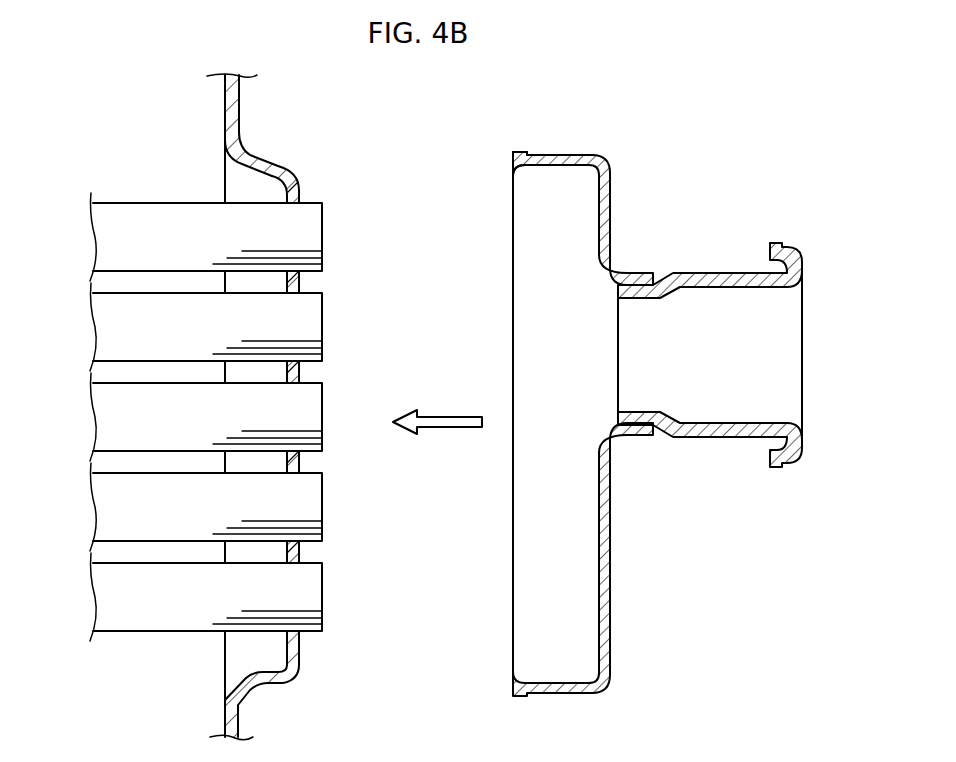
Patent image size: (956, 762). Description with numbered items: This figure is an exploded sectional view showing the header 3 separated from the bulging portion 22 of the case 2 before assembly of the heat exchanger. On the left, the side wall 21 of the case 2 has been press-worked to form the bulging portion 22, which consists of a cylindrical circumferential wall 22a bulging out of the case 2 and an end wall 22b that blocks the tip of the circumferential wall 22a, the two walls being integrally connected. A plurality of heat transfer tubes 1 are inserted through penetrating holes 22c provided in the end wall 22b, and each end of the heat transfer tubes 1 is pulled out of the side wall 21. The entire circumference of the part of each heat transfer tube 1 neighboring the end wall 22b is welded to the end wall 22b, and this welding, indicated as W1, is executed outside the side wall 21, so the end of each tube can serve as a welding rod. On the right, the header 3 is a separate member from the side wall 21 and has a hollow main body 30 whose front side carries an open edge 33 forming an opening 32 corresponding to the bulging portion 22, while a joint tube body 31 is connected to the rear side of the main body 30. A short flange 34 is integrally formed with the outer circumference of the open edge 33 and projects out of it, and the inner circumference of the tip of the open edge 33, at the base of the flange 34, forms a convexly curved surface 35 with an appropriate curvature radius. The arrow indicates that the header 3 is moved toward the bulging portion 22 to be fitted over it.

The heat transfer tube 1 is at (102, 243).
The case 2 is at (285, 405).
The side wall 21 is at (235, 98).
The bulging portion 22 is at (301, 423).
The circumferential wall 22a is at (260, 163).
The end wall 22b is at (300, 177).
The penetrating hole 22c is at (295, 620).
The welding W1 is at (306, 199).
The header 3 is at (626, 398).
The main body 30 is at (558, 154).
The joint tube body 31 is at (718, 278).
The opening 32 is at (527, 272).
The open edge 33 is at (510, 155).
The flange 34 is at (515, 151).
The convexly curved surface 35 is at (522, 166).